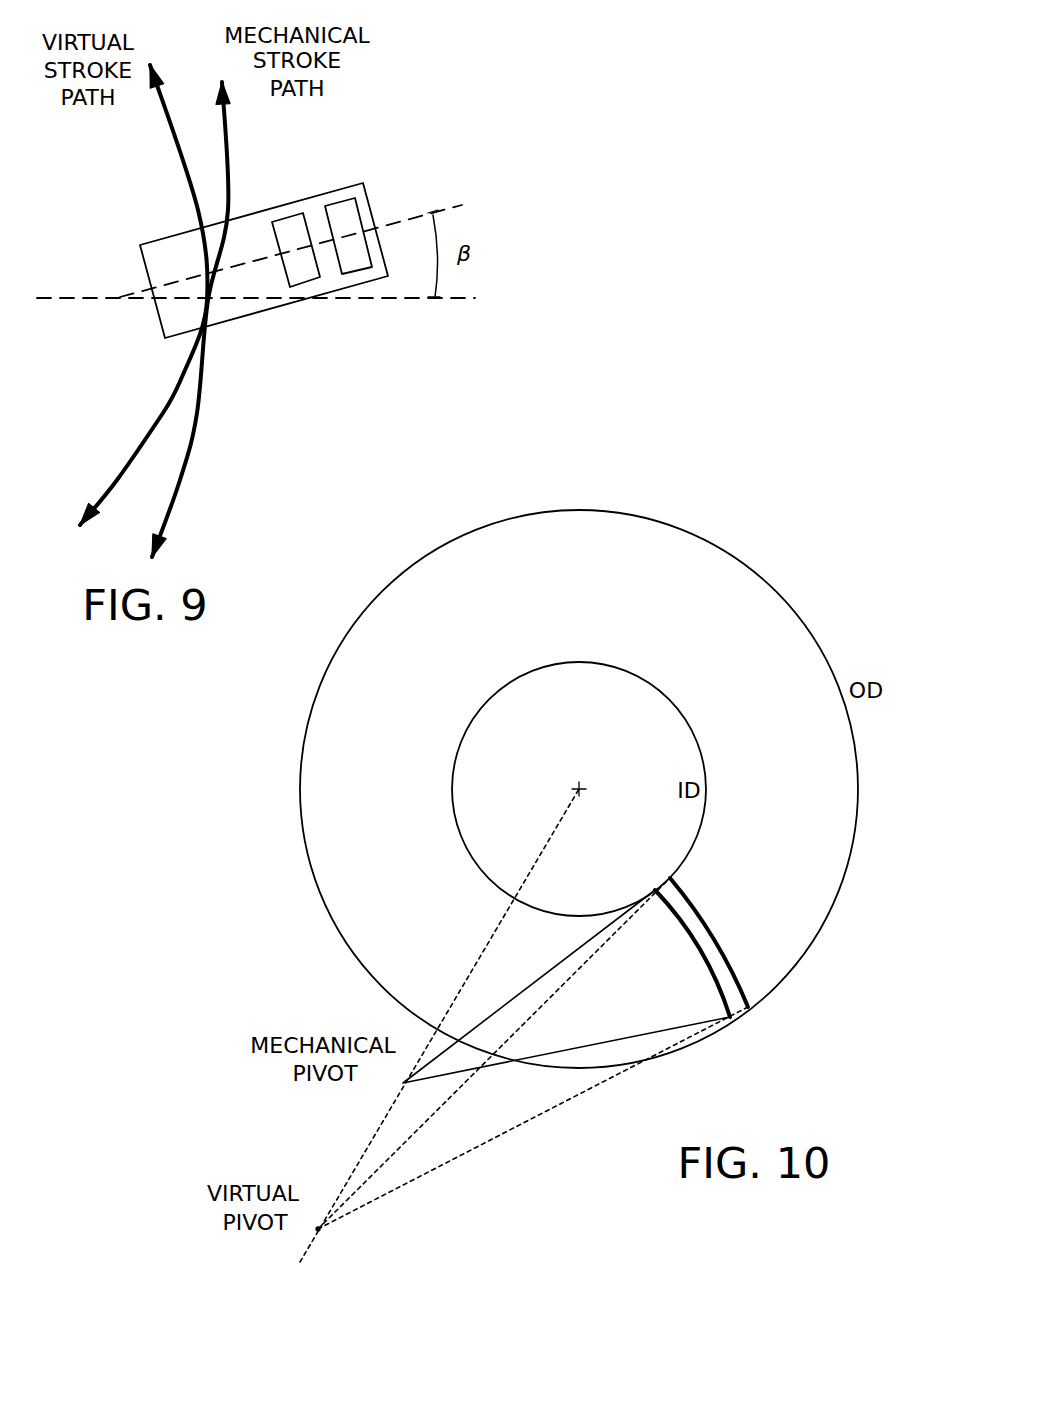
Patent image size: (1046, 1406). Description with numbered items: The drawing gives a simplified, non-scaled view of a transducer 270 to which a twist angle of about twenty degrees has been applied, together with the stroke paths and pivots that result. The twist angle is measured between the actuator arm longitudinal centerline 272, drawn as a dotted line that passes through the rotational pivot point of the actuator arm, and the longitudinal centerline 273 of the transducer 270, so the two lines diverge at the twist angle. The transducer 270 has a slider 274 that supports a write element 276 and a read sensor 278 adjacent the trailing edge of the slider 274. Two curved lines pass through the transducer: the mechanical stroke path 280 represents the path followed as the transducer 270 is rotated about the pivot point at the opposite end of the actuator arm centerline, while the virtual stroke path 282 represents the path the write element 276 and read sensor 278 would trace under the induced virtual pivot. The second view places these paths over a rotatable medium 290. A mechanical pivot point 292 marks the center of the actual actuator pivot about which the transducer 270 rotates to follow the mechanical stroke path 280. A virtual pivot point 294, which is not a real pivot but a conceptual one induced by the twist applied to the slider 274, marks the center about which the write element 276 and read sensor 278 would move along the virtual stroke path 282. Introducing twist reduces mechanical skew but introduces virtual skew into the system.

In FIG. 9, the transducer 270 is at (136, 186).
In FIG. 9, the actuator arm longitudinal centerline 272 is at (62, 296).
In FIG. 9, the transducer longitudinal centerline 273 is at (402, 217).
In FIG. 9, the slider 274 is at (297, 203).
In FIG. 9, the write element 276 is at (363, 270).
In FIG. 9, the read sensor 278 is at (306, 282).
In FIG. 9, the mechanical stroke path 280 is at (163, 413).
In FIG. 10, the mechanical stroke path 280 is at (697, 910).
In FIG. 9, the virtual stroke path 282 is at (197, 423).
In FIG. 10, the virtual stroke path 282 is at (692, 925).
In FIG. 10, the rotatable medium 290 is at (745, 607).
In FIG. 10, the mechanical pivot point 292 is at (388, 1086).
In FIG. 10, the virtual pivot point 294 is at (338, 1237).